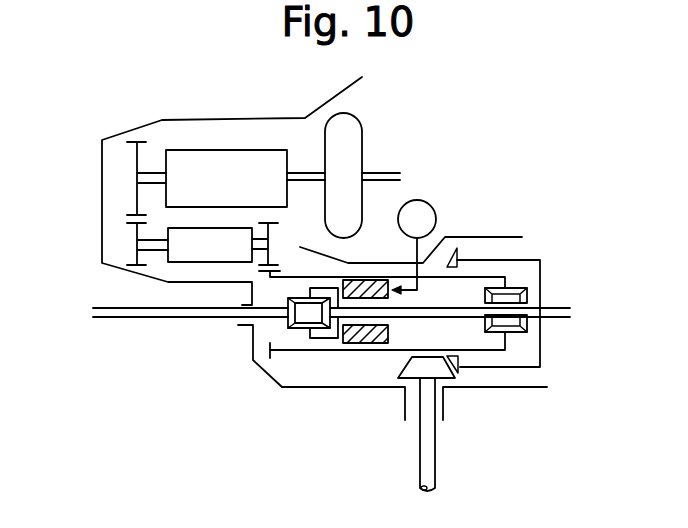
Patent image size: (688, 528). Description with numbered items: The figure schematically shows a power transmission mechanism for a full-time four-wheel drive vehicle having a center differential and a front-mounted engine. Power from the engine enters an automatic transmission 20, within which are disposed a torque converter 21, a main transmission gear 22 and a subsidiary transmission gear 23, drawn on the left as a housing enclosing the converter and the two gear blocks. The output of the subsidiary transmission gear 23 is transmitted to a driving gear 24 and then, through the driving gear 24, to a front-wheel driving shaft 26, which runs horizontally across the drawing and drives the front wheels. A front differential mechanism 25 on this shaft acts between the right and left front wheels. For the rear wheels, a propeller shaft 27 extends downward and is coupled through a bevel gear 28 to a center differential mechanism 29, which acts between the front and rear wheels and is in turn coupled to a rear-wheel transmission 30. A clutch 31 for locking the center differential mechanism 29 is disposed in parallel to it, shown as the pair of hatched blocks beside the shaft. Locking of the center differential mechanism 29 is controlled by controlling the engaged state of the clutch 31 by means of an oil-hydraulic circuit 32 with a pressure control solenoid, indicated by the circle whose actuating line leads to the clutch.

The automatic transmission 20 is at (100, 197).
The torque converter 21 is at (362, 135).
The main transmission gear 22 is at (207, 178).
The subsidiary transmission gear 23 is at (203, 247).
The driving gear 24 is at (260, 350).
The front differential mechanism 25 is at (298, 342).
The front-wheel driving shaft 26 is at (556, 302).
The propeller shaft 27 is at (435, 460).
The bevel gear 28 is at (465, 377).
The center differential mechanism 29 is at (515, 288).
The rear-wheel transmission 30 is at (315, 265).
The clutch 31 is at (367, 280).
The oil-hydraulic circuit (pressure control solenoid) 32 is at (433, 204).